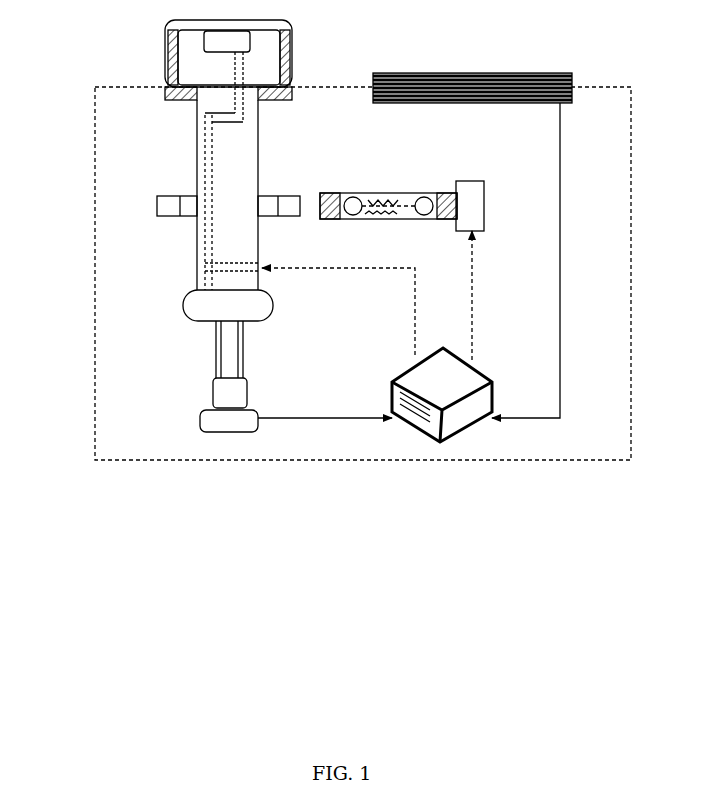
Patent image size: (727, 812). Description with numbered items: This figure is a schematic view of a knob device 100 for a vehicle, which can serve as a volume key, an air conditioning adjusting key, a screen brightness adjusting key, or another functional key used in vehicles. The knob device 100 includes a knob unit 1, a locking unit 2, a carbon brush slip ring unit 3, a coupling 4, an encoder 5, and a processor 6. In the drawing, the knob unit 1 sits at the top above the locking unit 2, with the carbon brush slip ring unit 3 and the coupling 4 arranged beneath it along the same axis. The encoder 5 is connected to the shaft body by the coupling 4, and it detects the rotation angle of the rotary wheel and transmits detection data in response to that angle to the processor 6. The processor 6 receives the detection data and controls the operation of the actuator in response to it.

The knob device 100 is at (153, 132).
The knob unit 1 is at (187, 58).
The locking unit 2 is at (170, 205).
The carbon brush slip ring unit 3 is at (215, 306).
The coupling 4 is at (225, 418).
The encoder 5 is at (458, 440).
The processor 6 is at (398, 205).